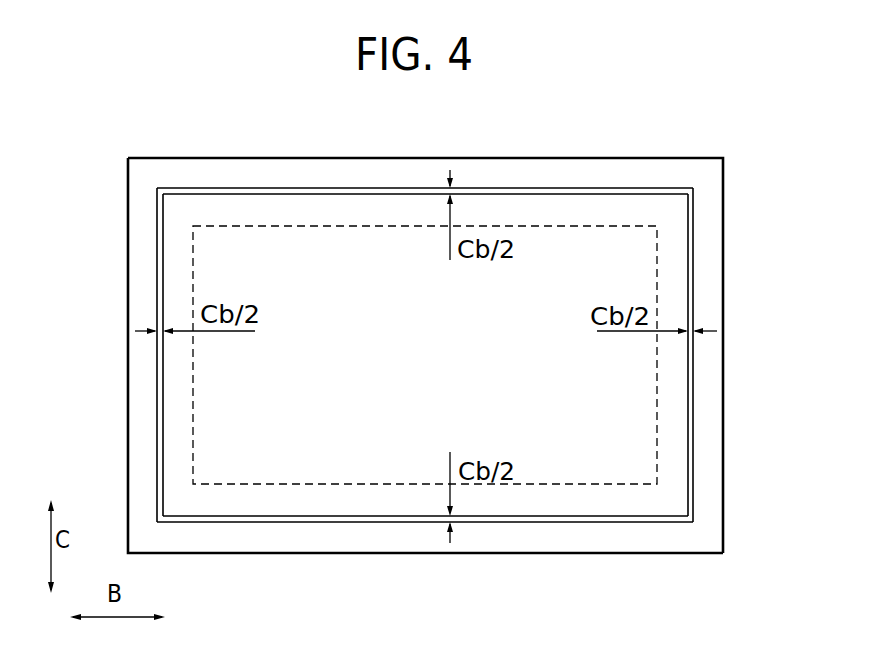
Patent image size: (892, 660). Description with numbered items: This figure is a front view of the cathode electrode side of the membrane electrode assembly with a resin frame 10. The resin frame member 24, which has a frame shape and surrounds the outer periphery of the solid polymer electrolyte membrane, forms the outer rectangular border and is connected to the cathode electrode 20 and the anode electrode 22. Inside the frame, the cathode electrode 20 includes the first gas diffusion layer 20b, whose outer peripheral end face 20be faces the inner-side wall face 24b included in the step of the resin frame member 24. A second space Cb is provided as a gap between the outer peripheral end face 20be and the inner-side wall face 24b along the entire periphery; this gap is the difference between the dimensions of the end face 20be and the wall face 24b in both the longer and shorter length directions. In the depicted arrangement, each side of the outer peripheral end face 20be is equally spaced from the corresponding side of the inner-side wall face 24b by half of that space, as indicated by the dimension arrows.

The membrane electrode assembly with a resin frame 10 is at (515, 93).
The cathode electrode 20 is at (641, 506).
The first gas diffusion layer 20b is at (252, 498).
The outer peripheral end face 20be is at (288, 193).
The anode electrode 22 is at (540, 470).
The resin frame member 24 is at (726, 156).
The inner-side wall face 24b is at (688, 398).